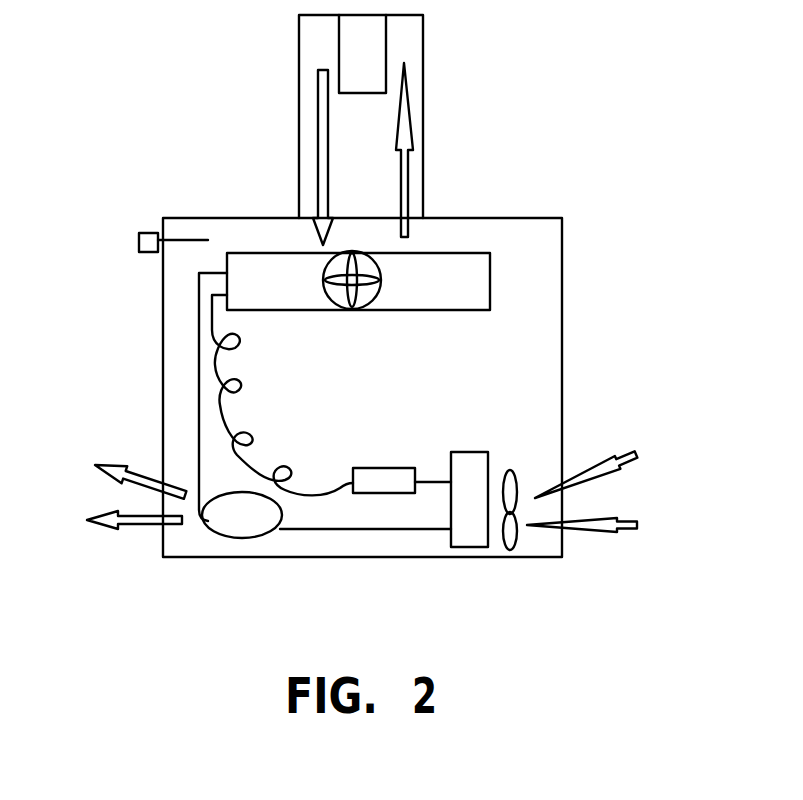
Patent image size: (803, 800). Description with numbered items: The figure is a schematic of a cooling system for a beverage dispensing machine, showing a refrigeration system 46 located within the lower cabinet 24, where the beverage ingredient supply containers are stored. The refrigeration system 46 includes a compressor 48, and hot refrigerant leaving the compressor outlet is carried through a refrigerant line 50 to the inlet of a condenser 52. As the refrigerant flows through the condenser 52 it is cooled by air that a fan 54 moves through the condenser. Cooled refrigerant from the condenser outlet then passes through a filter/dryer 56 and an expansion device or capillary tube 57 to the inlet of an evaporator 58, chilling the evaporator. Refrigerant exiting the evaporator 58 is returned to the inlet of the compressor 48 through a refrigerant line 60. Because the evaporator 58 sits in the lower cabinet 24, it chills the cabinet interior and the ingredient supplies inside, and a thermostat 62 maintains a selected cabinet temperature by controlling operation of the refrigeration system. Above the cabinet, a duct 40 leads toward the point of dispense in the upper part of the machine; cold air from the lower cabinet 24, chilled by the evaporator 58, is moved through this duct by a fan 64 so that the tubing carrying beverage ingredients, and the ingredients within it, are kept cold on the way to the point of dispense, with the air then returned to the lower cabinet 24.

The lower cabinet 24 is at (537, 345).
The nozzle / tool 40 is at (370, 45).
The refrigeration system 46 is at (321, 544).
The compressor 48 is at (243, 523).
The refrigerant line 50 is at (407, 530).
The condenser 52 is at (462, 462).
The fan 54 is at (505, 470).
The filter/dryer 56 is at (373, 473).
The expansion device or capillary tube 57 is at (240, 386).
The evaporator 58 is at (428, 295).
The refrigerant line 60 is at (198, 370).
The thermostat 62 is at (147, 240).
The fan 64 is at (377, 268).